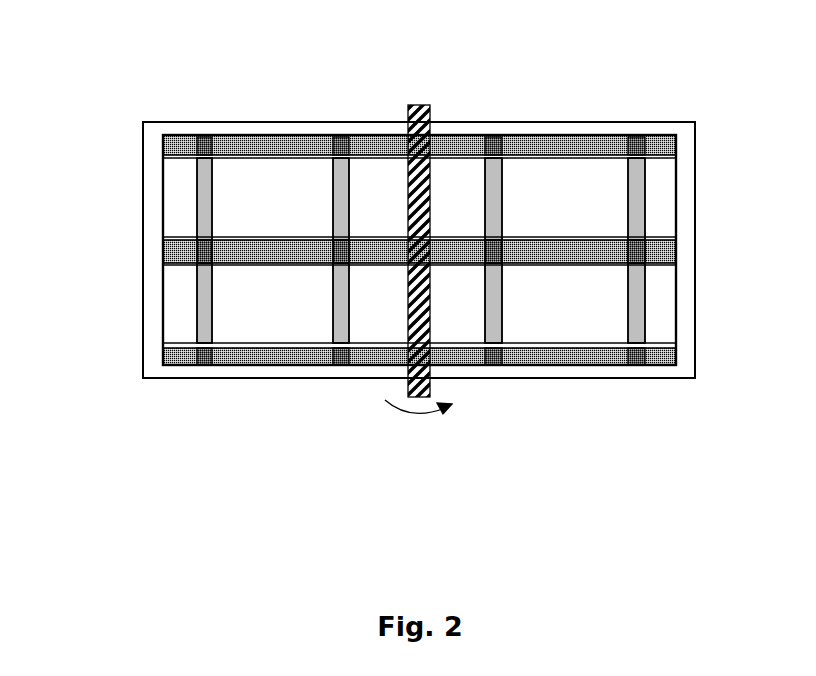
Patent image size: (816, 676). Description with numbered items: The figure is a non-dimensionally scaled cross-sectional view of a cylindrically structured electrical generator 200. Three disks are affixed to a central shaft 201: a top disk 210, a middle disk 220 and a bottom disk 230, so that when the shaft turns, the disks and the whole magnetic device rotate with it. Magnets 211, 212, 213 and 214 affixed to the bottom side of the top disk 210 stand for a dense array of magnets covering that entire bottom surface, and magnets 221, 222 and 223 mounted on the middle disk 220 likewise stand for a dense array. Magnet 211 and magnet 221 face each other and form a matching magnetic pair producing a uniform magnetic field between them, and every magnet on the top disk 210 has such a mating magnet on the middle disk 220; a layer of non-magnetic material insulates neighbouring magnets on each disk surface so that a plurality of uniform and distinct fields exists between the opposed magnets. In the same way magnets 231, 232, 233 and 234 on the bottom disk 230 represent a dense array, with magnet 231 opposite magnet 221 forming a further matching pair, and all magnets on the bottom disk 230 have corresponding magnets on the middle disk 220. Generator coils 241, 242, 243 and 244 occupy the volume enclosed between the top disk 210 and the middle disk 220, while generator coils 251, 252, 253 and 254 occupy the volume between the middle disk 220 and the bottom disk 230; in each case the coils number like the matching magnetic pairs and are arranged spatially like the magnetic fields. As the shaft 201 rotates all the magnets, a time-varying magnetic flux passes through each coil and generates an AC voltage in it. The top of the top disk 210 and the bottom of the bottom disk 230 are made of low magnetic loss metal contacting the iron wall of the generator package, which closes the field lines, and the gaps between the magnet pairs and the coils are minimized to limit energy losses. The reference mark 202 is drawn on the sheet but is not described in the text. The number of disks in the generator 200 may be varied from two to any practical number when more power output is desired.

The electrical generator 200 is at (555, 121).
The shaft 201 is at (421, 104).
The display area 202 is at (263, 121).
The top disk 210 is at (677, 143).
The middle disk 220 is at (676, 248).
The bottom disk 230 is at (676, 355).
The magnet 211 is at (633, 138).
The magnet 212 is at (493, 138).
The magnet 213 is at (343, 138).
The magnet 214 is at (205, 136).
The magnet 221 is at (647, 240).
The magnet 222 is at (200, 252).
The magnet 223 is at (333, 243).
The magnet 231 is at (634, 368).
The magnet 232 is at (492, 368).
The magnet 233 is at (337, 367).
The magnet 234 is at (203, 366).
The generator coil 241 is at (647, 178).
The generator coil 242 is at (501, 172).
The generator coil 243 is at (332, 172).
The generator coil 244 is at (197, 200).
The generator coil 251 is at (647, 307).
The generator coil 252 is at (503, 330).
The generator coil 253 is at (331, 336).
The generator coil 254 is at (197, 312).